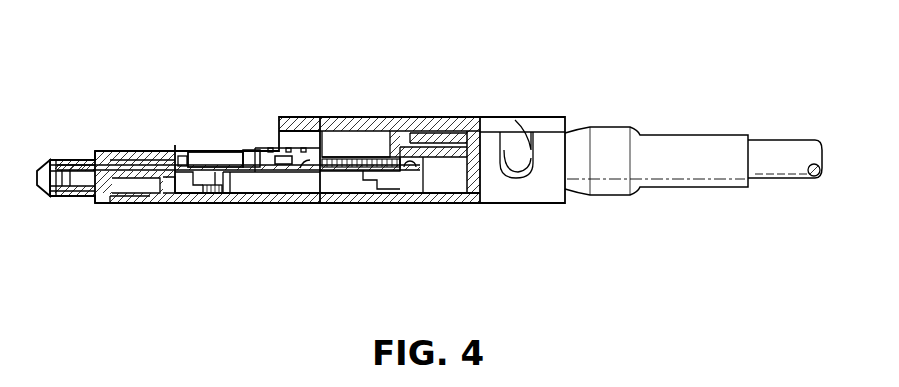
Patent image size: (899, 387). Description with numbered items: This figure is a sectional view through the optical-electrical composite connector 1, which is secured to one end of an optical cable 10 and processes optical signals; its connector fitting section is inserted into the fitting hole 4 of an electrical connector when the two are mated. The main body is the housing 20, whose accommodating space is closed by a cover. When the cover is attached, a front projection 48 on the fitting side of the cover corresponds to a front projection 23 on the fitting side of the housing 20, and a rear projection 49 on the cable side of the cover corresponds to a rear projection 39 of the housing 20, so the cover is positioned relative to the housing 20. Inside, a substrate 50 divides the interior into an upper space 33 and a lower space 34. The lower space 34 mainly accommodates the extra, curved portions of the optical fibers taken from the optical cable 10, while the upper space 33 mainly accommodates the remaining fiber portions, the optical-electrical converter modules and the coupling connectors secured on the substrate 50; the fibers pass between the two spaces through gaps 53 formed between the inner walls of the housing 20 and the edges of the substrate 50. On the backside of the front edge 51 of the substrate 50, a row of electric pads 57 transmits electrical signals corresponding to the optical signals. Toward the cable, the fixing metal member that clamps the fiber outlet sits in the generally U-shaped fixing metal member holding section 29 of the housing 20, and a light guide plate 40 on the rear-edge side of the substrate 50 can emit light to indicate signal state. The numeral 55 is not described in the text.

The optical-electrical composite connector 1 is at (400, 88).
The fitting hole 4 is at (281, 117).
The optical cable 10 is at (784, 152).
The housing 20 is at (371, 207).
The front projection 23 is at (137, 204).
The fixing metal member holding section 29 is at (515, 119).
The upper space 33 is at (348, 143).
The lower space 34 is at (338, 183).
The rear projection 39 is at (452, 135).
The light guide plate 40 is at (508, 164).
The front projection 48 is at (118, 204).
The rear projection 49 is at (443, 152).
The substrate 50 is at (259, 178).
The front edge 51 is at (78, 193).
The gap 53 is at (298, 169).
The spring 55 is at (415, 169).
The electric pad 57 is at (68, 193).